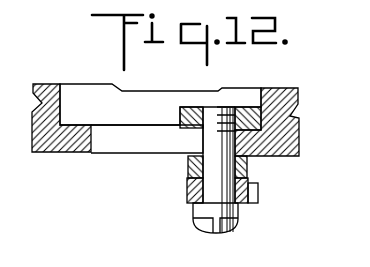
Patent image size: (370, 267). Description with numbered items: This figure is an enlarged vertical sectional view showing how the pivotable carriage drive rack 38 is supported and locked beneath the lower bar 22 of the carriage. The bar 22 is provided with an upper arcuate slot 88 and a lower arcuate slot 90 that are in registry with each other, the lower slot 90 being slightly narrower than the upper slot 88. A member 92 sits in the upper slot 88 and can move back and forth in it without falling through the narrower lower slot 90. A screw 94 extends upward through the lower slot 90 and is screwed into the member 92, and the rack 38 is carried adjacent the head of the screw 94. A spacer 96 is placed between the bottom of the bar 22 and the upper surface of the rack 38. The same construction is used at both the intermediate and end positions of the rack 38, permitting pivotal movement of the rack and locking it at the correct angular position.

The lower bar 22 is at (299, 130).
The carriage drive rack 38 is at (258, 191).
The upper arcuate slot 88 is at (87, 100).
The lower arcuate slot 90 is at (130, 147).
The member 92 is at (183, 104).
The screw 94 is at (238, 222).
The spacer 96 is at (249, 169).